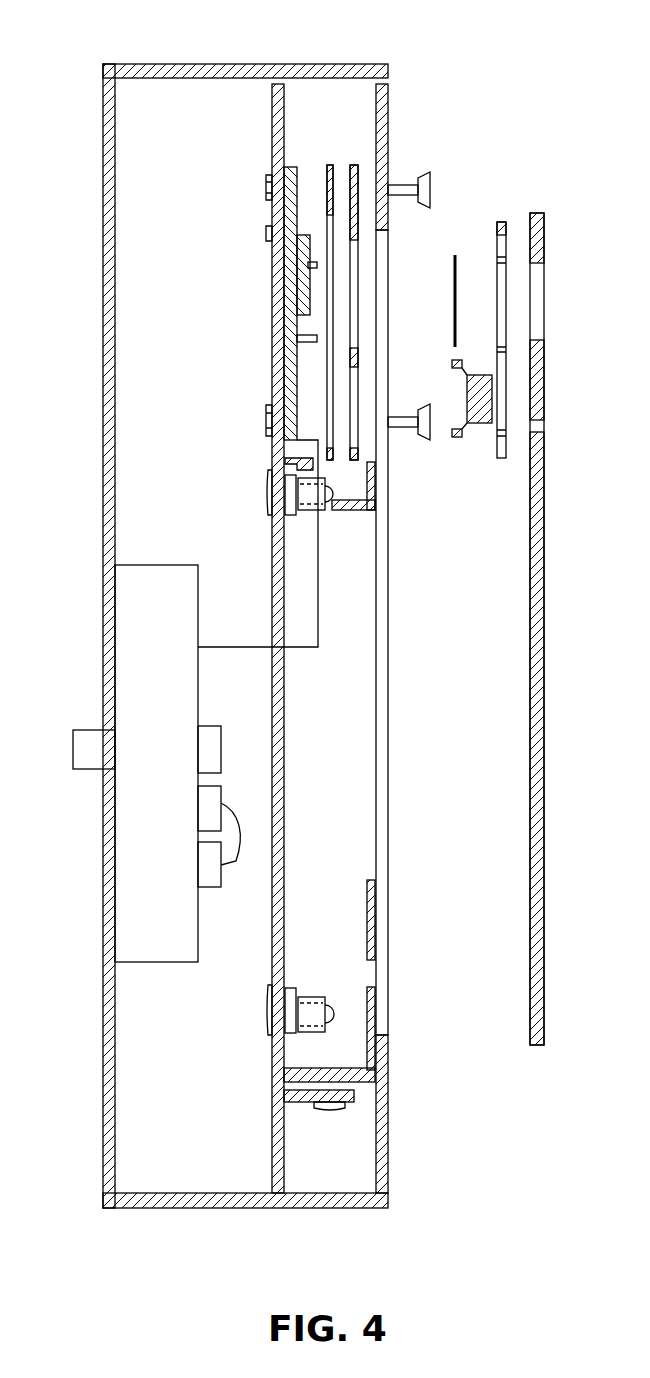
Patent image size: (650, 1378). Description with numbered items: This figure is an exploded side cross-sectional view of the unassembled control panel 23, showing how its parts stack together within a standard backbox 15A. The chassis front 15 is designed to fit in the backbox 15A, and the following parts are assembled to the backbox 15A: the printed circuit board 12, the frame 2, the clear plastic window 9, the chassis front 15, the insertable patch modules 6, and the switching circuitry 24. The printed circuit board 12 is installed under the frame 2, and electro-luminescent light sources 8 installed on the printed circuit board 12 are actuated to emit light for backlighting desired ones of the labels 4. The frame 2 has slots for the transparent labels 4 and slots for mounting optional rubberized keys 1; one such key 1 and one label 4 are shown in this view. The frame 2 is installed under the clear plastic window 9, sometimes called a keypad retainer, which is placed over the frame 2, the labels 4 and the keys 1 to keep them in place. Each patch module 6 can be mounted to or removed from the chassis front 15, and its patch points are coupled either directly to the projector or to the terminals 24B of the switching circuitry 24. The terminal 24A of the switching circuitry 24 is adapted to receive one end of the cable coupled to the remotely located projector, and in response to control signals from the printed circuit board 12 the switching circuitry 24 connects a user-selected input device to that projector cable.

The rubberized key 1 is at (480, 422).
The frame 2 is at (354, 166).
The transparent label 4 is at (458, 266).
The patch module 6 is at (530, 670).
The electro-luminescent light source 8 is at (302, 236).
The clear plastic window 9 is at (505, 460).
The printed circuit board 12 is at (294, 168).
The chassis front 15 is at (388, 122).
The backbox 15A is at (215, 70).
The control panel 23 is at (555, 1225).
The switching circuitry 24 is at (135, 597).
The terminal 24A is at (75, 750).
The terminals 24B is at (221, 752).